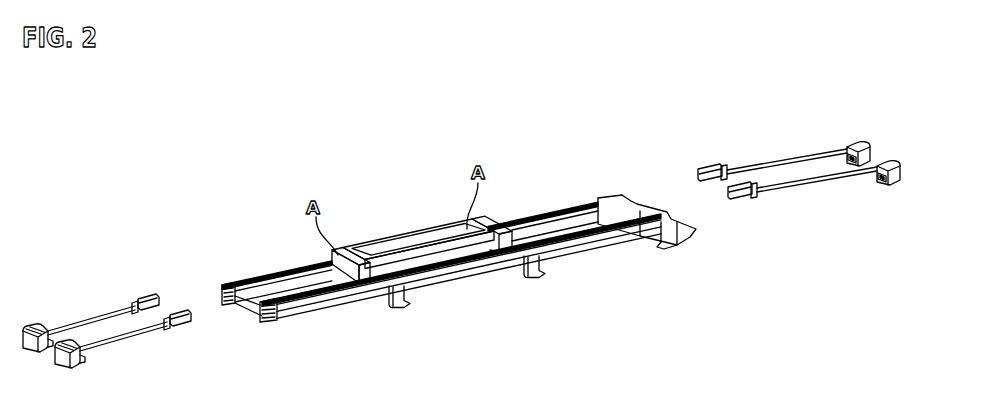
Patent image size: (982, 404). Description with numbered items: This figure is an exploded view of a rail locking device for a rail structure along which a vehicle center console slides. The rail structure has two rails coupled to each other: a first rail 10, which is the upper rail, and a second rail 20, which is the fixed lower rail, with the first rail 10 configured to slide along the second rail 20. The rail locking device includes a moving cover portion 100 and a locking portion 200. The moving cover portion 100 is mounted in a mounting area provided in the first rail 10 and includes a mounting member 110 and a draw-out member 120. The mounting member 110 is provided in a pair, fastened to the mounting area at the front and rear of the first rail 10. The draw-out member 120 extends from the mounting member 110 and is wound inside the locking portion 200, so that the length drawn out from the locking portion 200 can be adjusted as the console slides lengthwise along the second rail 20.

The first rail 10 is at (412, 230).
The second rail 20 is at (310, 312).
The moving cover portion 100 is at (95, 256).
The mounting member 110 is at (147, 298).
The draw-out member 120 is at (82, 319).
The locking portion 200 is at (37, 326).